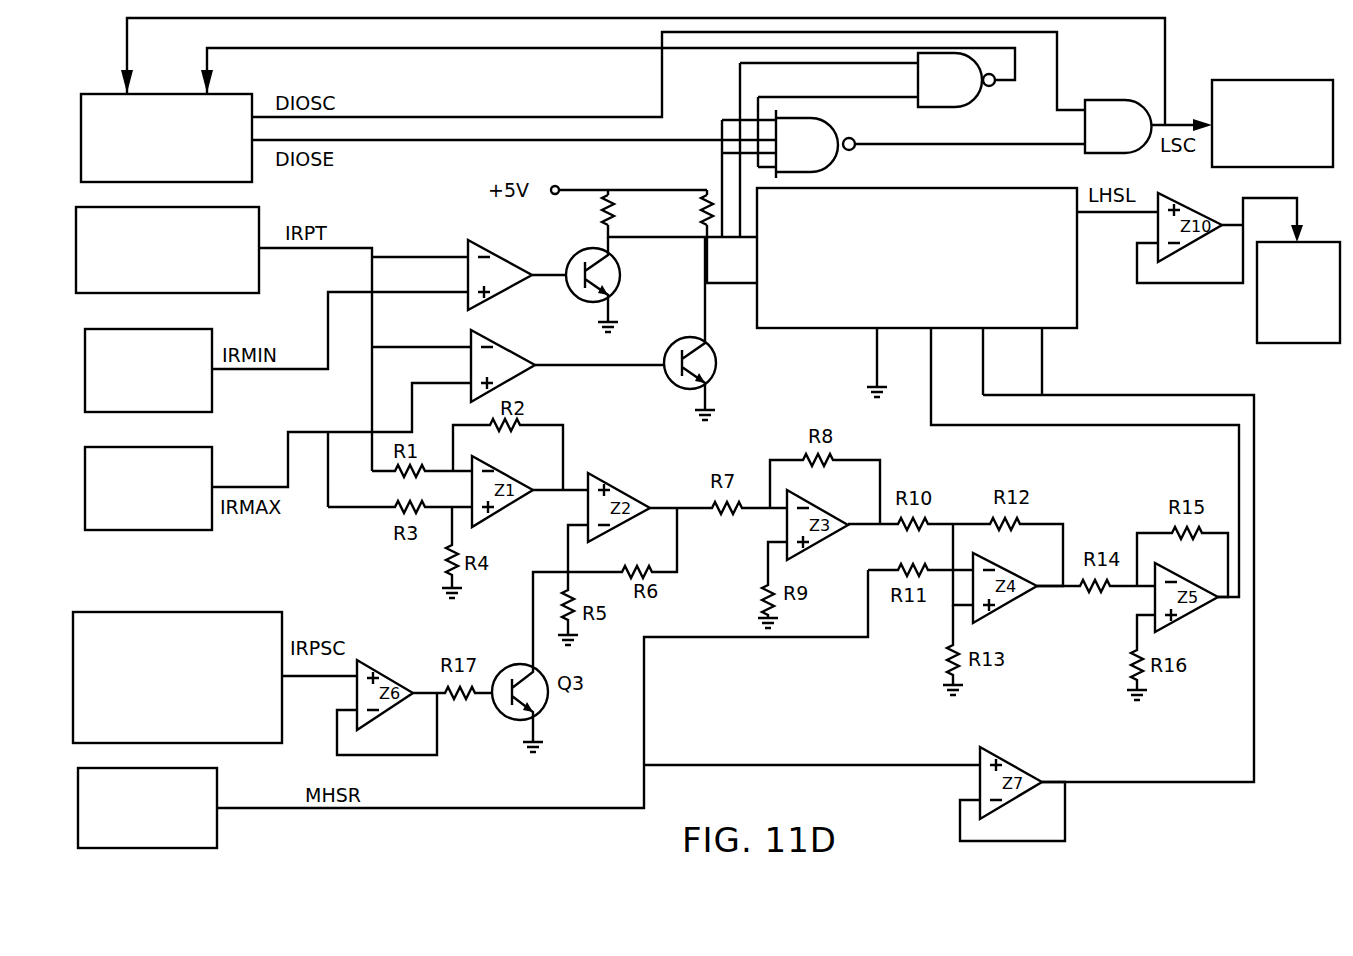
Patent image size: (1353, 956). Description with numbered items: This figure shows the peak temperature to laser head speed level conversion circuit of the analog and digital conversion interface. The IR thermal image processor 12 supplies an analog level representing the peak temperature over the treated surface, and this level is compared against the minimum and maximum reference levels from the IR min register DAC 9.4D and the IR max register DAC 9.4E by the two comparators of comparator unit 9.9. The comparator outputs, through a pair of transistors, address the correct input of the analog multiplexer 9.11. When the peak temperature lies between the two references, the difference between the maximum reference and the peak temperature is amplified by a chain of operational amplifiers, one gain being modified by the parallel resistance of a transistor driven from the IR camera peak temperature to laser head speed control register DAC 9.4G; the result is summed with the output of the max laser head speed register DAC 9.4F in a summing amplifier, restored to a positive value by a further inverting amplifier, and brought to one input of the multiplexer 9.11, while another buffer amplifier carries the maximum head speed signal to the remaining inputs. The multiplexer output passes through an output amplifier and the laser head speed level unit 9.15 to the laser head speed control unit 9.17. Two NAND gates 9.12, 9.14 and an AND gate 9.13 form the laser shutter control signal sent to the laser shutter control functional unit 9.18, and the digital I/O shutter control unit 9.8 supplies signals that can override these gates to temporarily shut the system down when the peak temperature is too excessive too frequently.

The digital I/O shutter control unit 9.8 is at (242, 93).
The IR thermal image processor 12 is at (260, 213).
The IR min register DAC 9.4D is at (212, 333).
The IR max register DAC 9.4E is at (200, 447).
The IR camera peak temperature to laser head speed control register DAC 9.4G is at (218, 612).
The max laser head speed register DAC 9.4F is at (217, 782).
The comparator unit 9.9 is at (553, 352).
The analog multiplexer 9.11 is at (1005, 485).
The laser head speed level unit 9.15 is at (1054, 542).
The NAND gate 9.12 is at (976, 100).
The AND gate 9.13 is at (1140, 100).
The NAND gate 9.14 is at (835, 162).
The laser head speed control unit 9.17 is at (1253, 333).
The laser shutter control functional unit 9.18 is at (1260, 80).